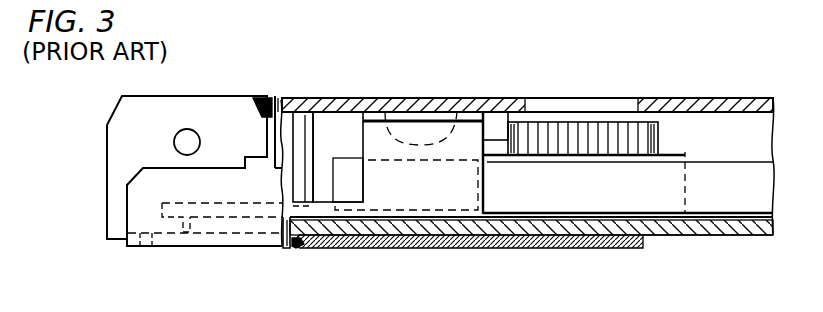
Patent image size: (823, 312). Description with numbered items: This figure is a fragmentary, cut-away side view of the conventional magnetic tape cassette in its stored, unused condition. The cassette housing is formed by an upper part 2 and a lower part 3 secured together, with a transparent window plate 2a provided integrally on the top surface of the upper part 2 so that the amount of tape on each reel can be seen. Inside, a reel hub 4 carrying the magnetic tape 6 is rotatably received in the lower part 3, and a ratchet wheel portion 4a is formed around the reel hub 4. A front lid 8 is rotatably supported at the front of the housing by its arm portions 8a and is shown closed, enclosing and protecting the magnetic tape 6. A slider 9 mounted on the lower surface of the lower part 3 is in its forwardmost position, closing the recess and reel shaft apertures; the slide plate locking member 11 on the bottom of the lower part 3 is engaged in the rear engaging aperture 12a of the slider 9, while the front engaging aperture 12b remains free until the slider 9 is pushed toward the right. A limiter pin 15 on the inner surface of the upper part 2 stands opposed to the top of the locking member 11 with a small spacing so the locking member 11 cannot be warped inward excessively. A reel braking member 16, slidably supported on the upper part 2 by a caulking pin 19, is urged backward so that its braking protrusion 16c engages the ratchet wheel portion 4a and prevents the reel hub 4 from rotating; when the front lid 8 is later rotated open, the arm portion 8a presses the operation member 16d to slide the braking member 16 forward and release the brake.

The upper part 2 is at (480, 100).
The transparent window plate 2a is at (640, 100).
The lower part 3 is at (700, 238).
The reel hub 4 is at (685, 152).
The ratchet wheel portion 4a is at (578, 135).
The magnetic tape 6 is at (770, 238).
The front lid 8 is at (107, 180).
The arm portion 8a is at (237, 113).
The slider 9 is at (525, 245).
The slide plate locking member 11 is at (302, 244).
The rear engaging aperture 12a is at (290, 248).
The front engaging aperture 12b is at (160, 250).
The limiter pin 15 is at (335, 112).
The reel braking member 16 is at (457, 135).
The braking protrusion 16c is at (497, 125).
The operation member 16d is at (160, 225).
The caulking pin 19 is at (383, 112).